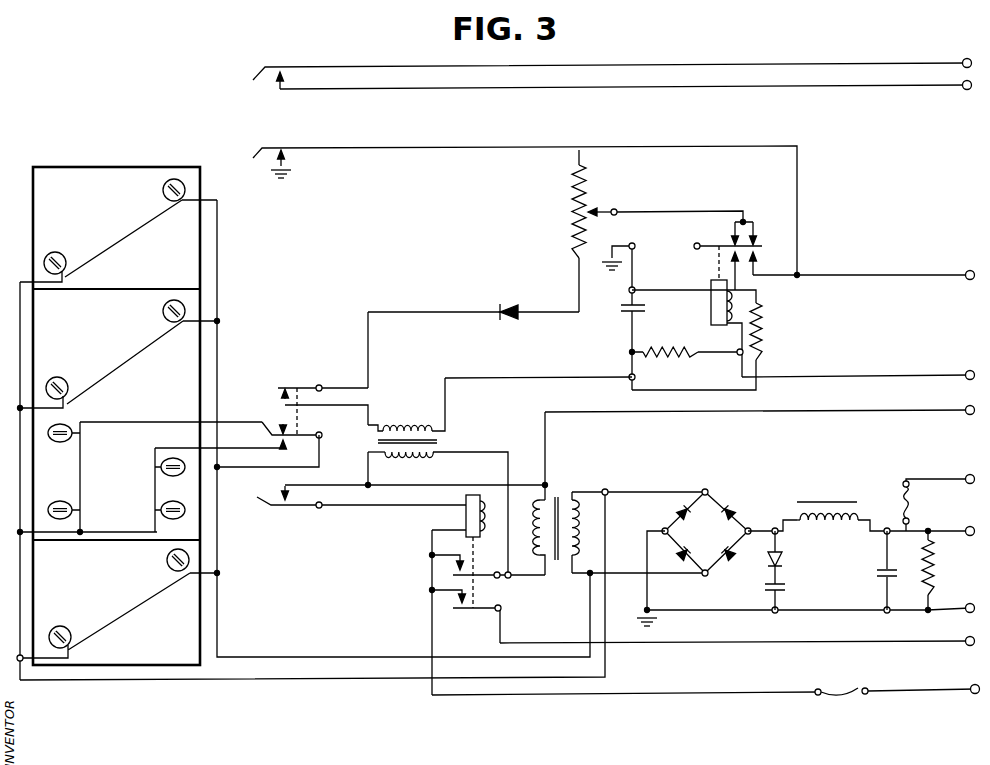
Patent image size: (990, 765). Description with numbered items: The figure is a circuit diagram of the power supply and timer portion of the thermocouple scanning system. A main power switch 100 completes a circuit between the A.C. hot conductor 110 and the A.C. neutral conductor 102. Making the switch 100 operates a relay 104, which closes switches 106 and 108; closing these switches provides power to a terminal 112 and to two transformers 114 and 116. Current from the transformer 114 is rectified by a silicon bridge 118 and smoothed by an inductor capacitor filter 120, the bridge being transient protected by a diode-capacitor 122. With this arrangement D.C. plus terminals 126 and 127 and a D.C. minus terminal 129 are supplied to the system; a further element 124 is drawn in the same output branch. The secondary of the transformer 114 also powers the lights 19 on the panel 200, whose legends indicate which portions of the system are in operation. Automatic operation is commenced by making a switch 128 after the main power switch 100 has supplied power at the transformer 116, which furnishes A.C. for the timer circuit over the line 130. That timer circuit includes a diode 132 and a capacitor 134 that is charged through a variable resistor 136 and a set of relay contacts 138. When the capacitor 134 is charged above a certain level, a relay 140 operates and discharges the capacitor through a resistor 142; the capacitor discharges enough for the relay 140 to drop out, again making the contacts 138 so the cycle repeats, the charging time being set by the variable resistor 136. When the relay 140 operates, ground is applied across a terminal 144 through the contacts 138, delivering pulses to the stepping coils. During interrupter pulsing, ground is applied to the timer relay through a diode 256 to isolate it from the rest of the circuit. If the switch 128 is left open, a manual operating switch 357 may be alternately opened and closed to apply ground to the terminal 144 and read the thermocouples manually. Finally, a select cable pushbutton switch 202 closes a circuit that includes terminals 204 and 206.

The lights 19 is at (60, 258).
The main power switch 100 is at (276, 512).
The A.C. neutral conductor 102 is at (597, 409).
The relay 104 is at (462, 519).
The switch 106 is at (452, 572).
The switch 108 is at (452, 606).
The A.C. hot conductor 110 is at (738, 693).
The terminal 112 is at (970, 636).
The transformer 114 is at (530, 520).
The transformer 116 is at (408, 426).
The silicon bridge 118 is at (706, 532).
The inductor capacitor filter 120 is at (846, 524).
The diode-capacitor 122 is at (788, 566).
The fuse 124 is at (903, 505).
The D.C. plus terminal 126 is at (968, 477).
The D.C. plus terminal 127 is at (968, 528).
The switch 128 is at (278, 398).
The D.C. minus terminal 129 is at (975, 602).
The line 130 is at (497, 376).
The diode 132 is at (512, 304).
The capacitor 134 is at (622, 312).
The variable resistor 136 is at (575, 215).
The relay contacts 138 is at (758, 240).
The relay 140 is at (712, 308).
The resistor 142 is at (790, 322).
The terminal 144 is at (965, 272).
The control panel 200 is at (88, 164).
The select cable pushbutton switch 202 is at (276, 76).
The terminal 204 is at (965, 58).
The terminal 206 is at (965, 88).
The diode 256 is at (965, 370).
The manual operating switch 357 is at (276, 158).